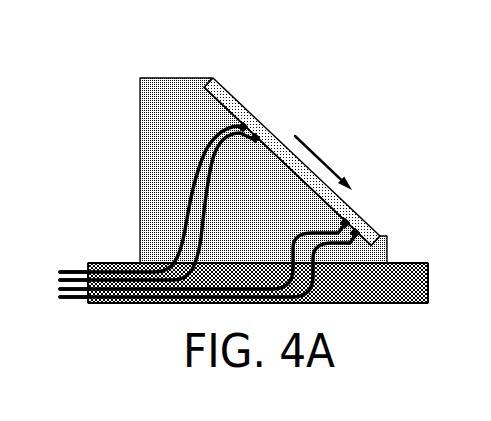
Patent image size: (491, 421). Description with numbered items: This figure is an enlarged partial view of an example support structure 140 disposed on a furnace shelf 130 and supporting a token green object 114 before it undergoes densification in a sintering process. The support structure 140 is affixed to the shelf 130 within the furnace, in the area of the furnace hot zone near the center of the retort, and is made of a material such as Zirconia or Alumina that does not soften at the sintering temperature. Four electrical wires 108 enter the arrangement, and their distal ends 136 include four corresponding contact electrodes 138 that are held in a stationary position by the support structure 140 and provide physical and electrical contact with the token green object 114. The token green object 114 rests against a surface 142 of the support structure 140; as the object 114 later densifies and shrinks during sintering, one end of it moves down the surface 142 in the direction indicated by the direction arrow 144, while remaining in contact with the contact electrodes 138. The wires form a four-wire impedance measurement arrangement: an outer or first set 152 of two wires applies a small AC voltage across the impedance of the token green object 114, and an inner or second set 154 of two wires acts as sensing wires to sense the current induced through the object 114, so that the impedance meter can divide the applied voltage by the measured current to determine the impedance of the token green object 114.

The electrical wires 108 is at (73, 270).
The token green object 114 is at (227, 91).
The shelf 130 is at (403, 263).
The distal ends 136 is at (179, 146).
The contact electrodes 138 is at (239, 126).
The support structure 140 is at (157, 78).
The surface 142 is at (305, 182).
The direction arrow 144 is at (313, 151).
The first set of two wires 152 is at (193, 175).
The second set of two wires 154 is at (207, 208).